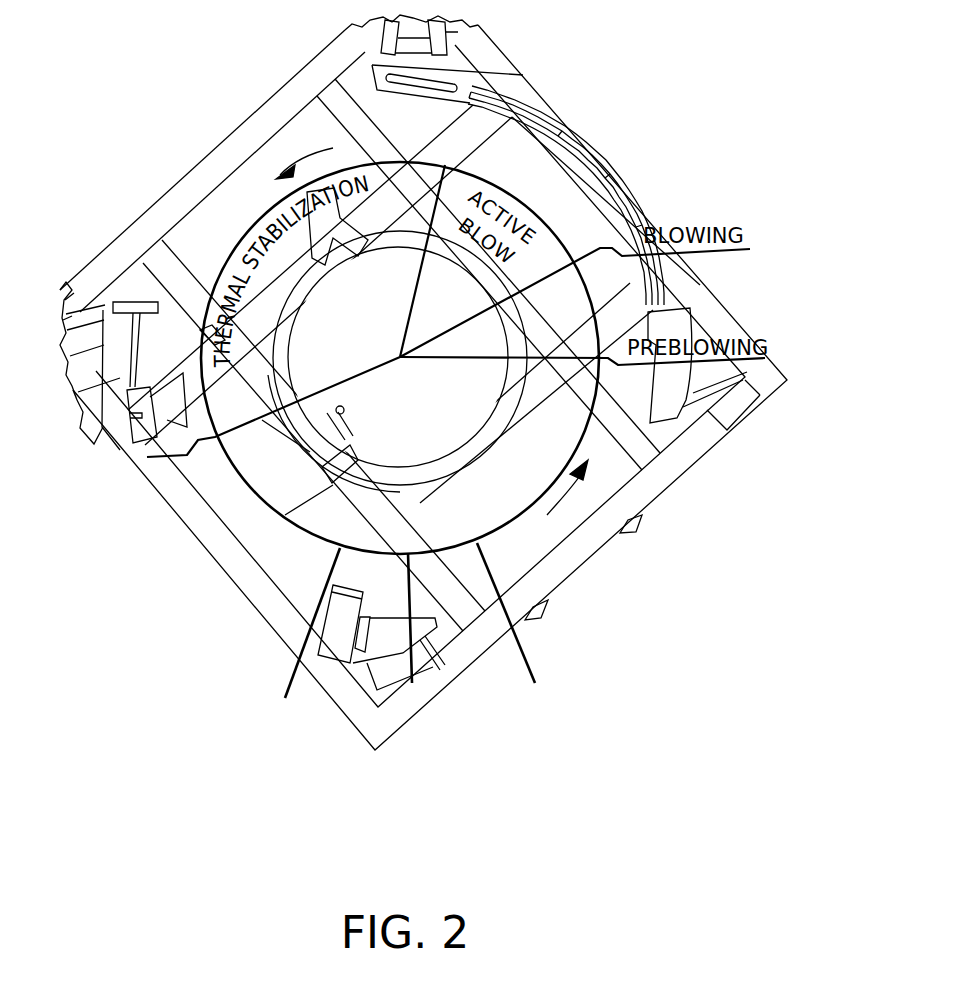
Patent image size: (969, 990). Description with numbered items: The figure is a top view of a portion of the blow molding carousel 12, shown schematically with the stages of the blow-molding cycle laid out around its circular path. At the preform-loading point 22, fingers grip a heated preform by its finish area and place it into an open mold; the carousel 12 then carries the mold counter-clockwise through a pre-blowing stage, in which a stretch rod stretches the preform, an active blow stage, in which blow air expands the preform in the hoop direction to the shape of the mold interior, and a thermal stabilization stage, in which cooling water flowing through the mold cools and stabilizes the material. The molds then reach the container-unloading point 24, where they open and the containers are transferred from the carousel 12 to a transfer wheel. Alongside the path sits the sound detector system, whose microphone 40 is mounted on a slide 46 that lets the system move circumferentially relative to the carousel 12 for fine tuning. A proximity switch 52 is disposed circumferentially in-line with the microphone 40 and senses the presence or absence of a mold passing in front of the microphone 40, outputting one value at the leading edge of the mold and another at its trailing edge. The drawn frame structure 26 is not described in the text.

The blow molding carousel 12 is at (652, 141).
The preform-loading point 22 is at (747, 313).
The container-unloading point 24 is at (330, 672).
The frame 26 is at (342, 718).
The microphone 40 is at (165, 427).
The slide 46 is at (128, 322).
The proximity switch 52 is at (197, 372).